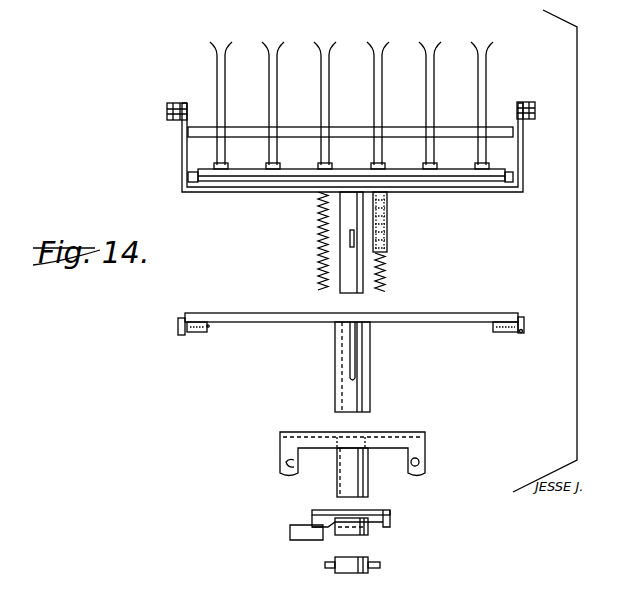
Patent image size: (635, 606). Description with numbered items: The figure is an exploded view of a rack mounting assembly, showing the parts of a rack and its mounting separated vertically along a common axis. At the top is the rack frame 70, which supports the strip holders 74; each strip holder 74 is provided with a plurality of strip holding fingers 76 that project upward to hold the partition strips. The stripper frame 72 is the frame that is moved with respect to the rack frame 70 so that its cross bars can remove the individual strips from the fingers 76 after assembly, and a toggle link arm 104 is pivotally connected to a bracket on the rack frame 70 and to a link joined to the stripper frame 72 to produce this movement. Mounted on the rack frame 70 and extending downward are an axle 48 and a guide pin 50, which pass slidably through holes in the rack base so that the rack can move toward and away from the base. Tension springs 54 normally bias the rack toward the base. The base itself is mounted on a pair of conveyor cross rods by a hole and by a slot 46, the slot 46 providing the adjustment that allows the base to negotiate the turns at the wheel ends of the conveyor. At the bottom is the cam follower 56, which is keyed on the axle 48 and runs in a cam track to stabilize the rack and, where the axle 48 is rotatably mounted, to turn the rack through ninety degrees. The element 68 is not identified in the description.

The arm 104 is at (527, 101).
The stripper frame 72 is at (397, 130).
The strip holding fingers 76 is at (488, 55).
The rack frame 70 is at (462, 173).
The strip holders 74 is at (273, 168).
The axle 48 is at (355, 265).
The guide pin 50 is at (387, 225).
The tension springs 54 is at (320, 245).
The cross bar with post 68 is at (520, 333).
The slot 46 is at (290, 468).
The cam follower 56 is at (392, 518).